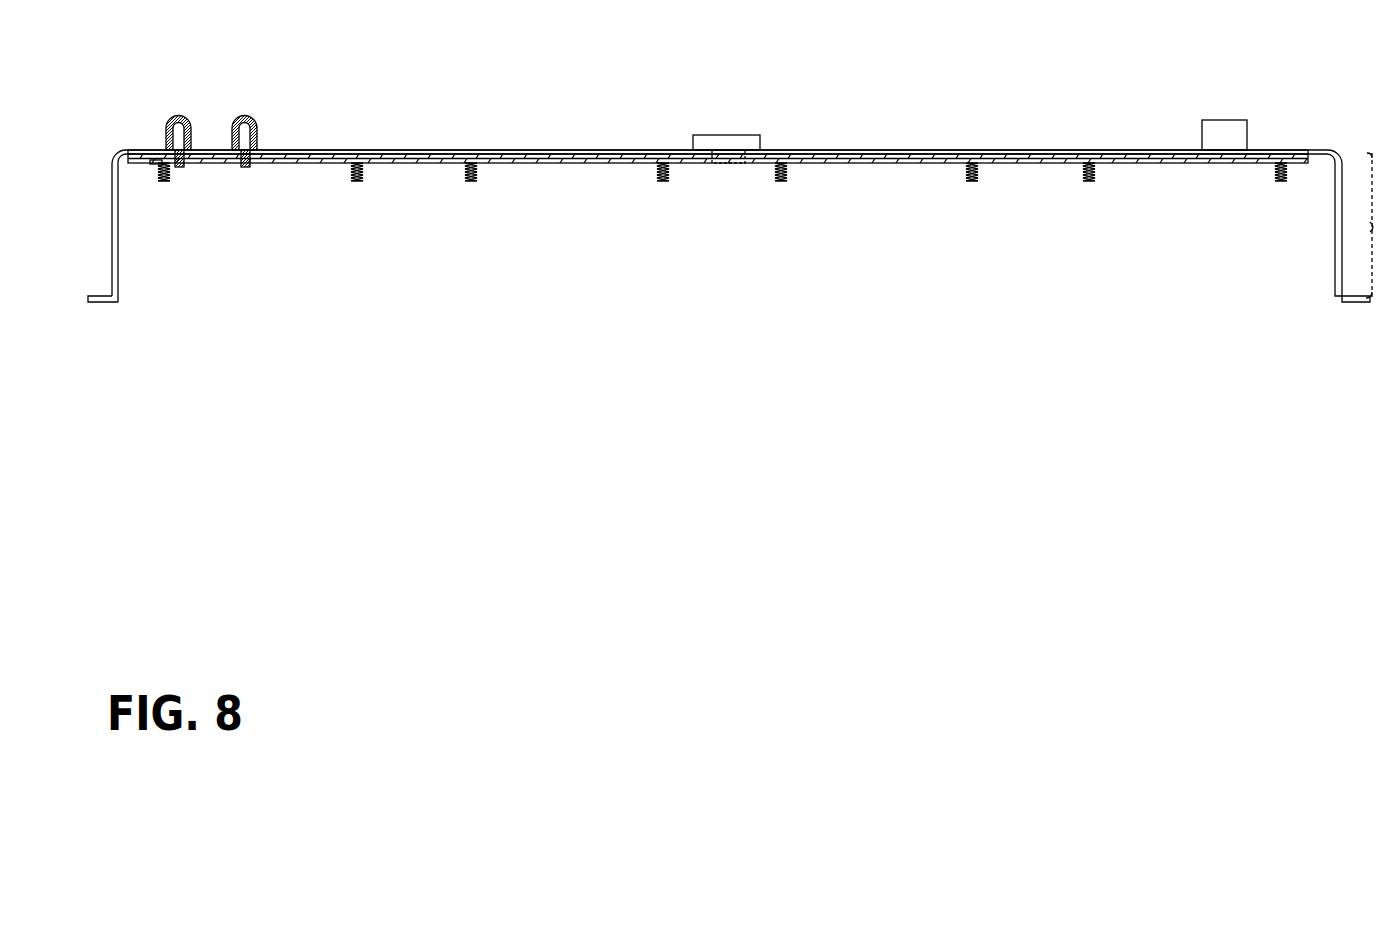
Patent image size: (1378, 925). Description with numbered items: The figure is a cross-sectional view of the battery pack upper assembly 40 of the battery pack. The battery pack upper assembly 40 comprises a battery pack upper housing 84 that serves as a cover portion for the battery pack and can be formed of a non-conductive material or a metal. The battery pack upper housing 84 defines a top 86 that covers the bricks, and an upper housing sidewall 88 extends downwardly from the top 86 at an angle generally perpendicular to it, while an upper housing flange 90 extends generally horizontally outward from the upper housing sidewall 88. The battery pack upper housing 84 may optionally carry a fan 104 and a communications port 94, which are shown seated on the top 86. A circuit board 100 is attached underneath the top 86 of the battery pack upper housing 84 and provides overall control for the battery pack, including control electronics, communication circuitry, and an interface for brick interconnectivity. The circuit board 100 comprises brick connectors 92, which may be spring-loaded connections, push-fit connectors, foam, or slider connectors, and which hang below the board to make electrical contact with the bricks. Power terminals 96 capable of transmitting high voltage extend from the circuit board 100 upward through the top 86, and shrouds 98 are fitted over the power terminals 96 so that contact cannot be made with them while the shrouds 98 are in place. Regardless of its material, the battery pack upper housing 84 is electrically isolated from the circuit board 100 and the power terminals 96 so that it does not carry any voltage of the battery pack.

The battery pack upper assembly 40 is at (1377, 120).
The battery pack upper housing 84 is at (1160, 128).
The top 86 is at (1282, 152).
The upper housing sidewall 88 is at (111, 237).
The upper housing flange 90 is at (98, 303).
The brick connectors 92 is at (162, 183).
The communications port 94 is at (1220, 127).
The power terminals 96 is at (179, 167).
The shrouds 98 is at (175, 116).
The circuit board 100 is at (552, 165).
The fan 104 is at (723, 135).